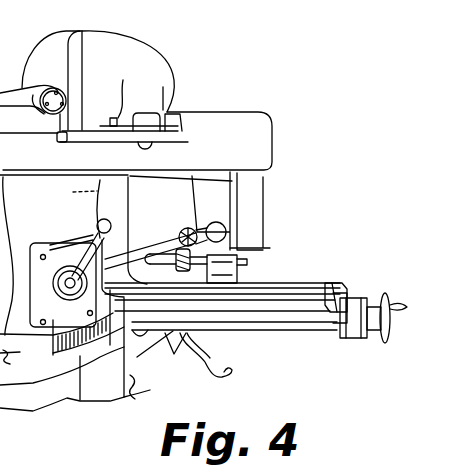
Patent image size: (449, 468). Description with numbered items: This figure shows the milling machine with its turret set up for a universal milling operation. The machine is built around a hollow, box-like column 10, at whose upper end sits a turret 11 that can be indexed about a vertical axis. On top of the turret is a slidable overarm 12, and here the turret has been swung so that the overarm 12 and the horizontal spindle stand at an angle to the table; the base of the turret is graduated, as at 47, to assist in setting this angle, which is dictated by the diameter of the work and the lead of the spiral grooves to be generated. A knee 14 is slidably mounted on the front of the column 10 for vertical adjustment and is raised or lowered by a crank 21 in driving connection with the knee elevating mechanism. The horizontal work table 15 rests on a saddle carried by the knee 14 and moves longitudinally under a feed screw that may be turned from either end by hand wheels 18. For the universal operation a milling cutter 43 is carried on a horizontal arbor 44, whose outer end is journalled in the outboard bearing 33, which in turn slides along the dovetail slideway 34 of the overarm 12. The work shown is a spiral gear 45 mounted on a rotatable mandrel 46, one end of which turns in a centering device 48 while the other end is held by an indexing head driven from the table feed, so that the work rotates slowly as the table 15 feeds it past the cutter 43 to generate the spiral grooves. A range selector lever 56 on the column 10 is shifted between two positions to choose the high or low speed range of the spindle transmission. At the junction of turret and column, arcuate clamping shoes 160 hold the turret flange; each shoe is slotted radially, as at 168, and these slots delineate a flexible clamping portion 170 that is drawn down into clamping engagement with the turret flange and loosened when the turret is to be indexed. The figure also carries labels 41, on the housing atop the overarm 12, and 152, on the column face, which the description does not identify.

The column 10 is at (65, 388).
The turret 11 is at (38, 189).
The overarm 12 is at (262, 142).
The knee 14 is at (148, 392).
The work table 15 is at (310, 283).
The hand wheels 18 is at (383, 341).
The crank 21 is at (212, 352).
The outboard bearing 33 is at (270, 190).
The dovetail slideway 34 is at (215, 175).
The motor 41 is at (158, 68).
The milling cutter 43 is at (183, 237).
The horizontal arbor 44 is at (147, 247).
The spiral gear 45 is at (186, 272).
The rotatable mandrel 46 is at (157, 270).
The graduations 47 is at (100, 377).
The centering device 48 is at (240, 272).
The range selector lever 56 is at (98, 225).
The cover plate 152 is at (50, 246).
The clamping shoes 160 is at (32, 313).
The radial slots 168 is at (28, 400).
The clamping portion 170 is at (46, 370).